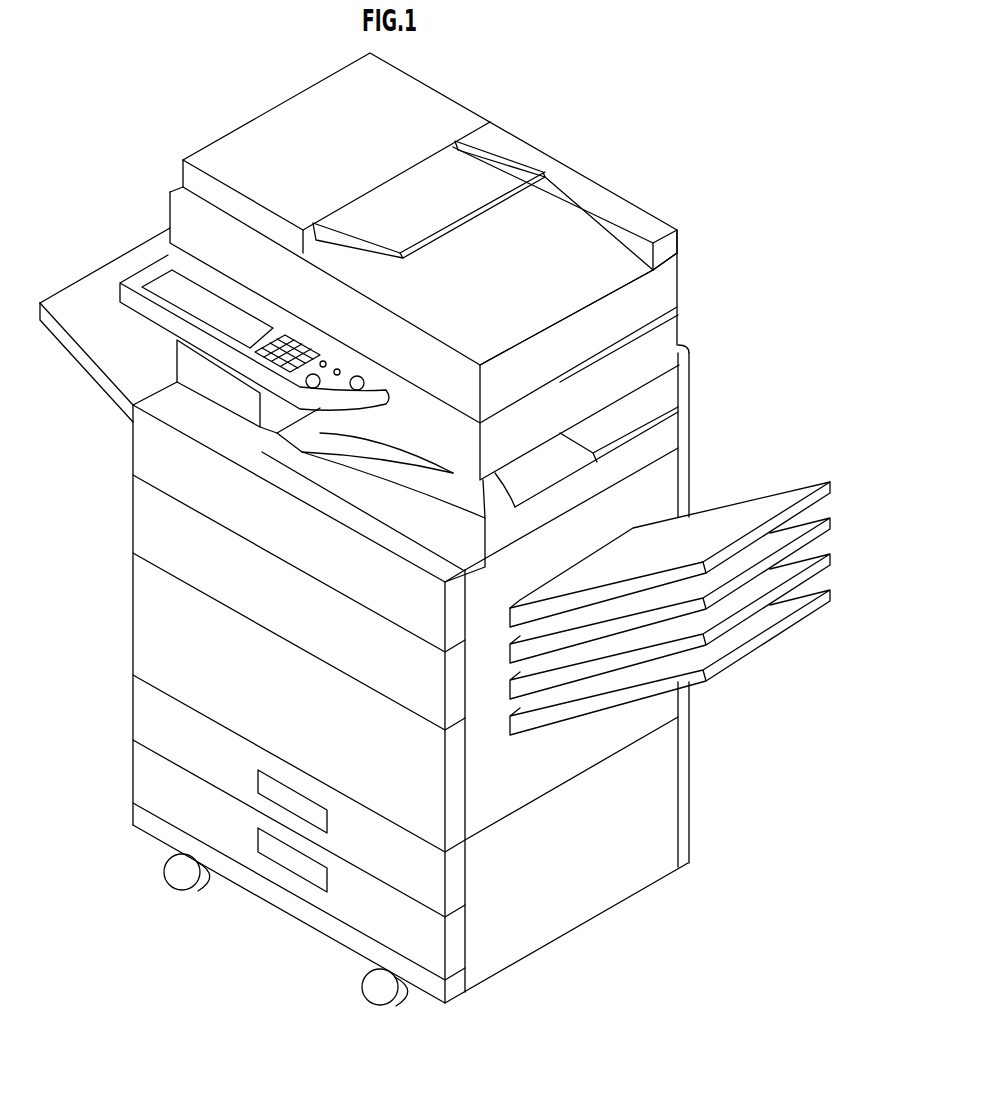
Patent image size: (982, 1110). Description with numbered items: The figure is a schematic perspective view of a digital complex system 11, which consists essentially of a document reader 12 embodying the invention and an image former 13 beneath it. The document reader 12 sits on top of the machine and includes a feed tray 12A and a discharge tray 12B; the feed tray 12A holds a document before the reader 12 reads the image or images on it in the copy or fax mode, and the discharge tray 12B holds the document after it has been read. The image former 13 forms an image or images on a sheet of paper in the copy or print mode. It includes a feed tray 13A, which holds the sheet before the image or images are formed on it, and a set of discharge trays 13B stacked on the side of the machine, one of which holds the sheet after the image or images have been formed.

The digital complex system 11 is at (717, 101).
The document reader 12 is at (464, 105).
The feed tray 12A is at (497, 177).
The discharge tray 12B is at (552, 222).
The image former 13 is at (679, 474).
The feed tray 13A is at (89, 273).
The discharge trays 13B is at (660, 407).